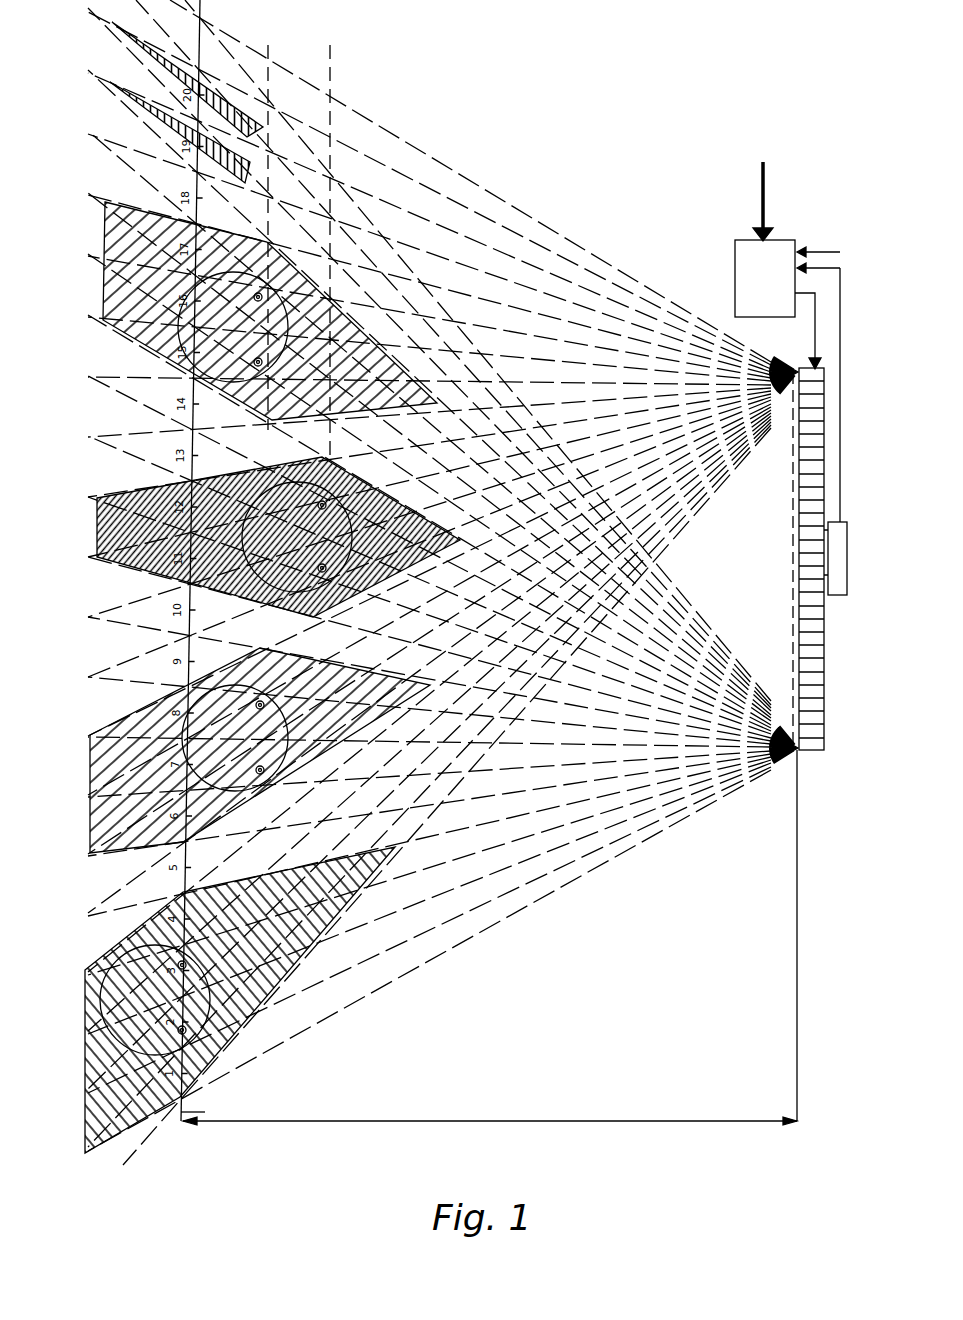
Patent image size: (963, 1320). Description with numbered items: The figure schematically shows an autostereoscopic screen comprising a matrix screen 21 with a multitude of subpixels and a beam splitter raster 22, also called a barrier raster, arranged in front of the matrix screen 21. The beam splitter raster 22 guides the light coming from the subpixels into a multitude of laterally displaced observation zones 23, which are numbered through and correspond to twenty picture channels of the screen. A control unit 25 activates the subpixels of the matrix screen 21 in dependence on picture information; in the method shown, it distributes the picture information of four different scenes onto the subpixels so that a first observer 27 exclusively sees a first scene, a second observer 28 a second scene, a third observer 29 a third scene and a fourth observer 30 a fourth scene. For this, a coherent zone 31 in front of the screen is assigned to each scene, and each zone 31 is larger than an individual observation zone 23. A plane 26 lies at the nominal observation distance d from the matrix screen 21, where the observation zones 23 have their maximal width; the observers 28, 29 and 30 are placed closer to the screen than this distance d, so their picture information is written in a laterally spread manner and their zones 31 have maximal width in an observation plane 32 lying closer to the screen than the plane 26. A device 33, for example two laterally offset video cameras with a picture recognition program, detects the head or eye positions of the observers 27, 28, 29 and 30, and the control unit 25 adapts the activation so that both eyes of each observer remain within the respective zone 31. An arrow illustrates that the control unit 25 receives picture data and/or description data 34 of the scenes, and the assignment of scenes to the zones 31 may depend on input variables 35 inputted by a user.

The matrix screen 21 is at (808, 758).
The beam splitter raster 22 is at (795, 492).
The observation zones 23 is at (230, 95).
The control unit 25 is at (733, 268).
The plane 26 is at (205, 1112).
The first observer 27 is at (213, 1008).
The second observer 28 is at (282, 770).
The third observer 29 is at (255, 597).
The fourth observer 30 is at (190, 367).
The coherent zone 31 is at (134, 208).
The observation plane 32 is at (268, 60).
The device for detecting a head position or eye position 33 is at (838, 597).
The picture data and/or description data 34 is at (761, 196).
The input variables 35 is at (822, 252).
The nominal observation distance d is at (606, 1118).